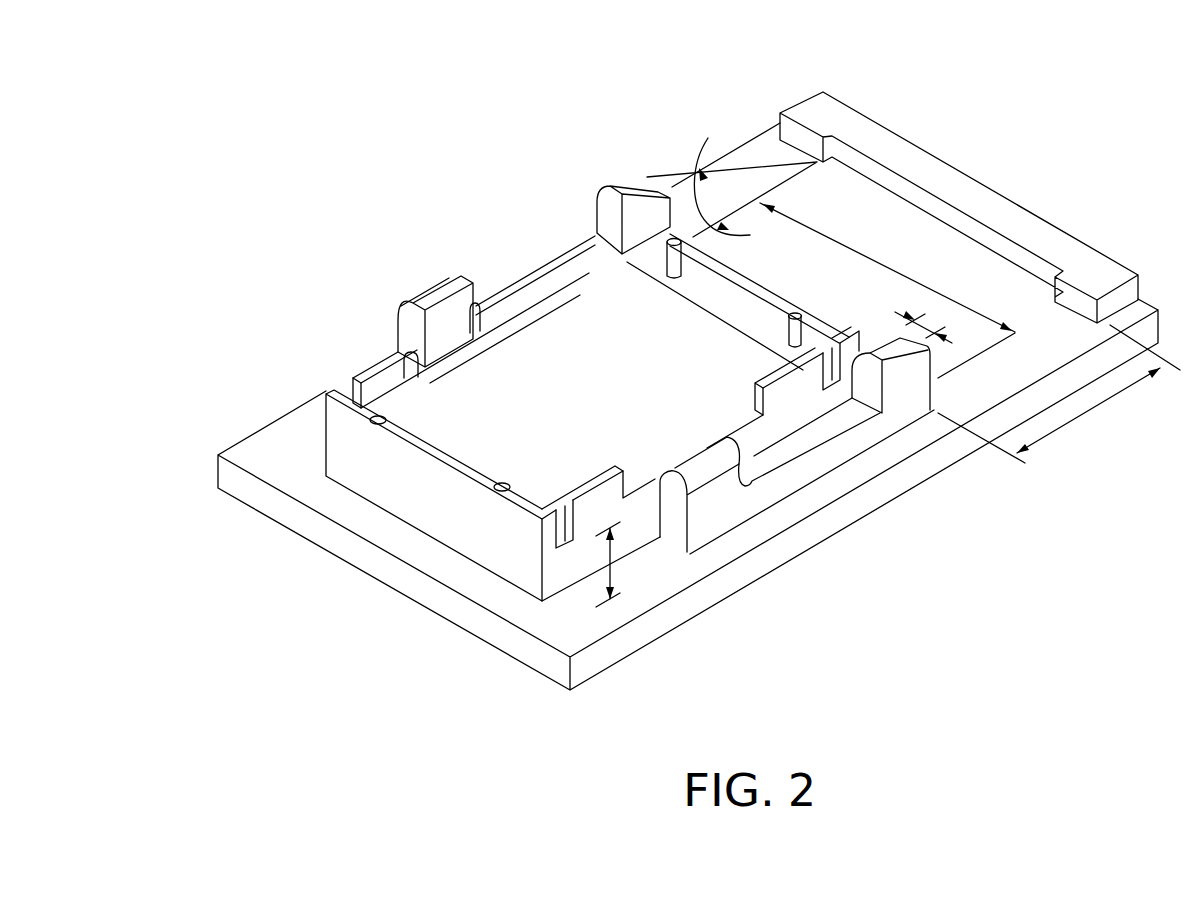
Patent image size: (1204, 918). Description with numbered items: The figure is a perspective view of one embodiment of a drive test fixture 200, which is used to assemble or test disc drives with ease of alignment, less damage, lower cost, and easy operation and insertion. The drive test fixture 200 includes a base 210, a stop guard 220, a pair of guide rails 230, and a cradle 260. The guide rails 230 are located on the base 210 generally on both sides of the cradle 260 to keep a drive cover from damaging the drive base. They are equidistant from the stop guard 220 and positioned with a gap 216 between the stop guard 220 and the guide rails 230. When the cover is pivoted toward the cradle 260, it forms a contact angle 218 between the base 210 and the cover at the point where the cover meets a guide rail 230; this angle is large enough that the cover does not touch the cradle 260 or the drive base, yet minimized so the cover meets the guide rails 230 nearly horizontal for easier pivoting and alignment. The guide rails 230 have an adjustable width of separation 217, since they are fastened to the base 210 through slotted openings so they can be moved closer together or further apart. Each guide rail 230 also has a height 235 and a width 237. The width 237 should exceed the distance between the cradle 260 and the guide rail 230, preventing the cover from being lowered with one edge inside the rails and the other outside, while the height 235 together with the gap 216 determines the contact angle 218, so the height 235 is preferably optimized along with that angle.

The drive test fixture 200 is at (428, 142).
The base 210 is at (267, 443).
The gap 216 is at (1090, 402).
The width of separation 217 is at (870, 263).
The contact angle 218 is at (697, 173).
The stop guard 220 is at (938, 173).
The guide rails 230 is at (508, 303).
The height 235 is at (607, 563).
The width 237 is at (930, 332).
The cradle 260 is at (333, 438).